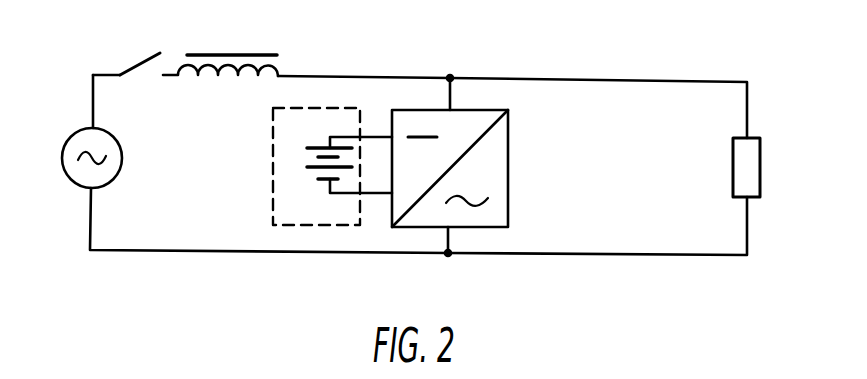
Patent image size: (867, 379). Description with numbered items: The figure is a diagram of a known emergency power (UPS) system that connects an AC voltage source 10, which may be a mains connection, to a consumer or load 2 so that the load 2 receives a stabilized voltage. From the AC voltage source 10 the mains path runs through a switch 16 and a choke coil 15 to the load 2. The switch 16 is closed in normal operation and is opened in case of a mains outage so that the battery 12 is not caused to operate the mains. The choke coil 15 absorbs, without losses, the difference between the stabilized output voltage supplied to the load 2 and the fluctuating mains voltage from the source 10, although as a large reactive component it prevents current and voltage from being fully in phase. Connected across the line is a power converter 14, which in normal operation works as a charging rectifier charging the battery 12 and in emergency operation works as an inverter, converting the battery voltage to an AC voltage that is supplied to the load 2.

The AC voltage source 10 is at (74, 134).
The switch 16 is at (143, 52).
The choke coil 15 is at (240, 48).
The battery 12 is at (270, 160).
The power converter 14 is at (508, 137).
The load 2 is at (760, 165).